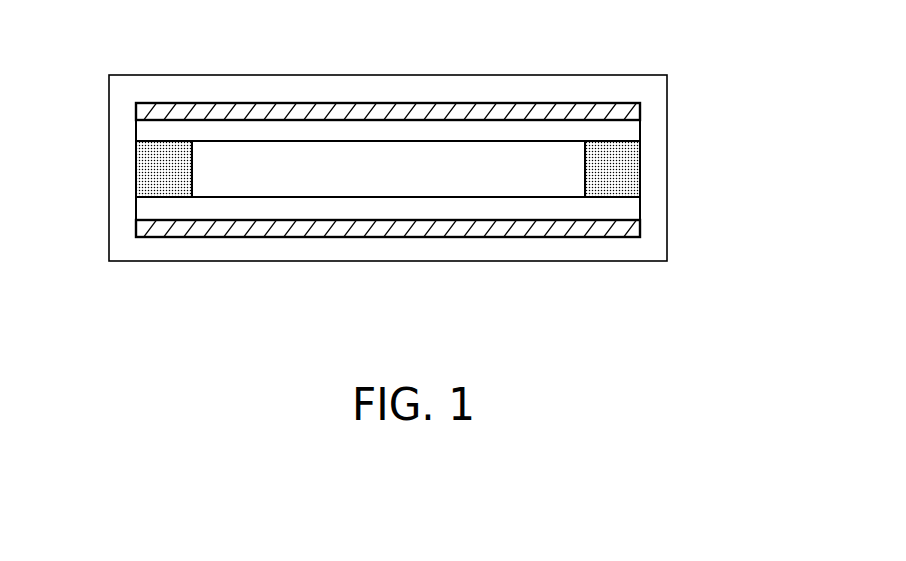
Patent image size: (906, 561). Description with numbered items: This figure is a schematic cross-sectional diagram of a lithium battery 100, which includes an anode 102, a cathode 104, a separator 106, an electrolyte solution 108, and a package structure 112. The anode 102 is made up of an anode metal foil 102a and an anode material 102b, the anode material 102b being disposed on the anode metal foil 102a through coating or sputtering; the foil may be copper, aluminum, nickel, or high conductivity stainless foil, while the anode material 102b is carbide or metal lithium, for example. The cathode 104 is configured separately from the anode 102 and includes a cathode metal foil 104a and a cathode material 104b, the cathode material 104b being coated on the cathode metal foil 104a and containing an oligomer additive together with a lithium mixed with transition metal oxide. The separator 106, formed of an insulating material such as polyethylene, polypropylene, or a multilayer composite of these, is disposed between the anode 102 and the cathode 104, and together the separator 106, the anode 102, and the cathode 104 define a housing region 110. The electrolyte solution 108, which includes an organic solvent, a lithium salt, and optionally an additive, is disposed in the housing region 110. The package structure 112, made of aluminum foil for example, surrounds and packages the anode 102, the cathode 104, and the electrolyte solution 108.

The lithium battery 100 is at (762, 342).
The anode 102 is at (459, 230).
The anode metal foil 102a is at (633, 230).
The anode material 102b is at (633, 203).
The cathode 104 is at (459, 109).
The cathode metal foil 104a is at (633, 112).
The cathode material 104b is at (633, 135).
The separator 106 is at (140, 178).
The electrolyte solution 108 is at (380, 168).
The housing region 110 is at (527, 166).
The package structure 112 is at (615, 92).